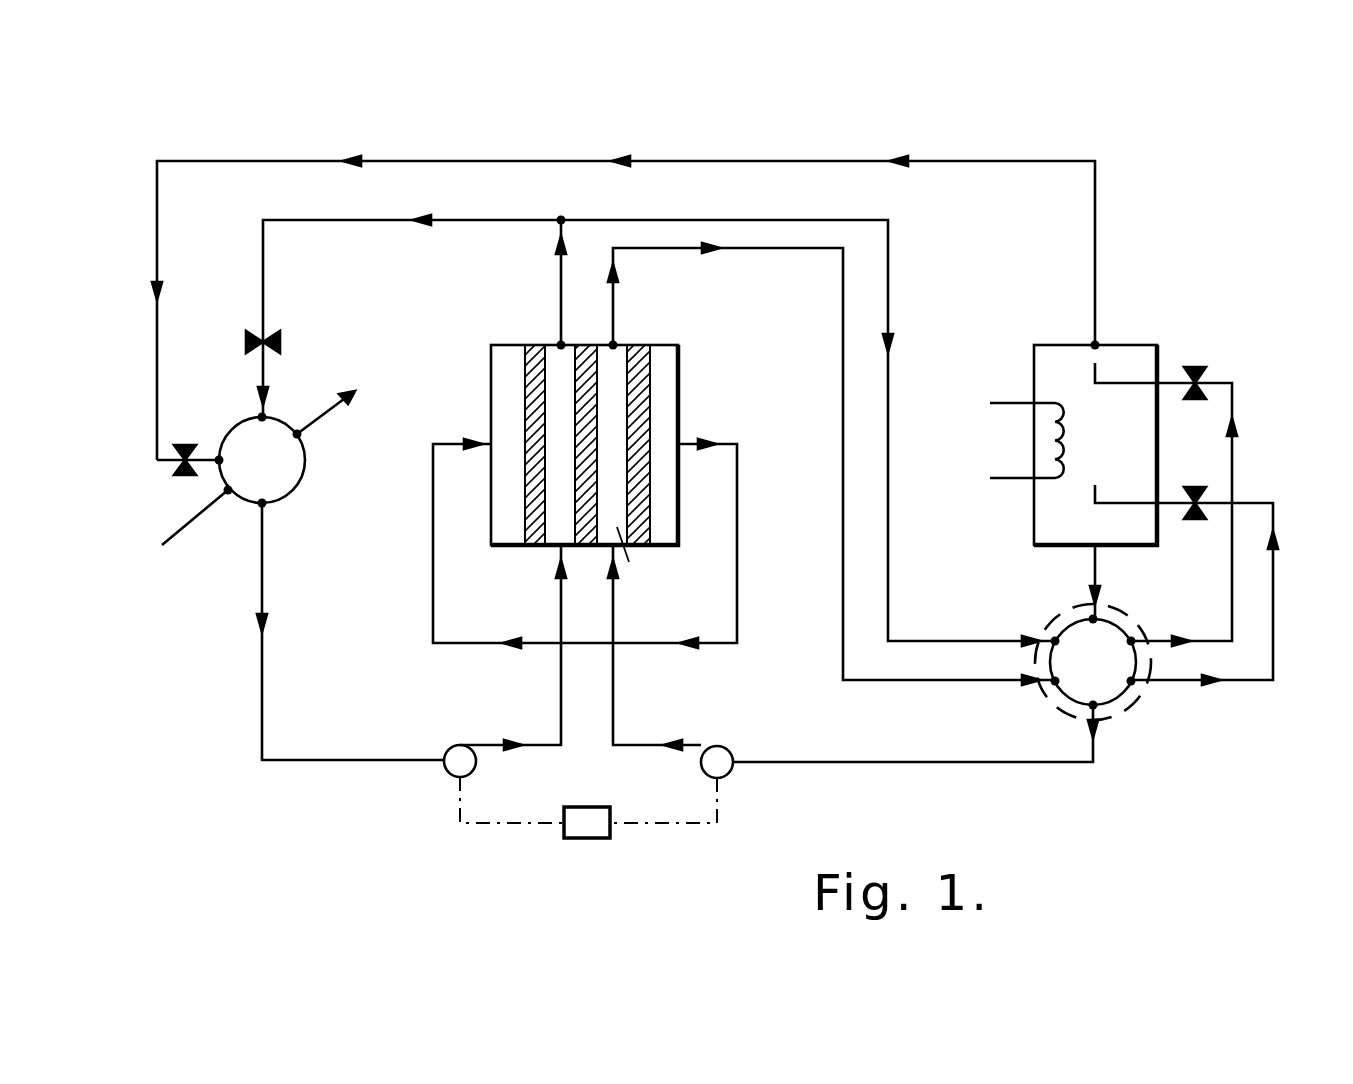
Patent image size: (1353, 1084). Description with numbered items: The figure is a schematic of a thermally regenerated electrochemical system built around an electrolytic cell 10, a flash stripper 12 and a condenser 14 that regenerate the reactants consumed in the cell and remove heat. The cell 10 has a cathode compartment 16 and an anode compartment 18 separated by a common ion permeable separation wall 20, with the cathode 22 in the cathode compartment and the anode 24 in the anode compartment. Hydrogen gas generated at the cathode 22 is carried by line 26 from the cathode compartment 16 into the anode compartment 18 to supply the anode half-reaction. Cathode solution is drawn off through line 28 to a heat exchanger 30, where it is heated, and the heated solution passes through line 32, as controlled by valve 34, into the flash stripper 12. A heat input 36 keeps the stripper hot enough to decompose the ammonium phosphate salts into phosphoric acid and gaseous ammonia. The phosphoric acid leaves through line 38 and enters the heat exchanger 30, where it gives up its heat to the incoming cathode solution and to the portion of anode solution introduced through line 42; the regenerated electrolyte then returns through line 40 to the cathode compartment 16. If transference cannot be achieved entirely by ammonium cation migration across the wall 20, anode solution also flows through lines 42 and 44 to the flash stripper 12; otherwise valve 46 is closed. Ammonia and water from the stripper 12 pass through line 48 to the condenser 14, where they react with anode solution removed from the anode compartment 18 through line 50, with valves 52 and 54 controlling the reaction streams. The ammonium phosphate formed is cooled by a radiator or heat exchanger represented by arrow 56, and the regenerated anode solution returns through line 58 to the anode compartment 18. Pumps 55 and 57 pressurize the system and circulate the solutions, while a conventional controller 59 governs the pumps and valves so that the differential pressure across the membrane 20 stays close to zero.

The electrolytic cell 10 is at (697, 342).
The flash stripper 12 is at (1160, 343).
The condenser 14 is at (305, 478).
The cathode compartment 16 is at (636, 560).
The anode compartment 18 is at (548, 355).
The ion permeable separation wall 20 is at (588, 350).
The cathode 22 is at (637, 352).
The anode 24 is at (520, 392).
The hydrogen gas line 26 is at (737, 585).
The cathode solution line 28 is at (842, 598).
The heat exchanger 30 is at (1125, 688).
The heated solution line 32 is at (1273, 572).
The valve 34 is at (1195, 515).
The heat input 36 is at (1012, 480).
The phosphoric acid line 38 is at (1095, 590).
The return line 40 is at (850, 762).
The anode solution line 42 is at (888, 297).
The anode solution line to stripper 44 is at (1232, 448).
The valve 46 is at (1205, 368).
The ammonia and water line 48 is at (423, 162).
The anode solution line to condenser 50 is at (263, 265).
The valve 52 is at (270, 342).
The valve 54 is at (190, 450).
The pump 55 is at (448, 775).
The cooling means arrow 56 is at (180, 535).
The pump 57 is at (725, 778).
The regenerated anode solution line 58 is at (263, 735).
The controller 59 is at (606, 838).